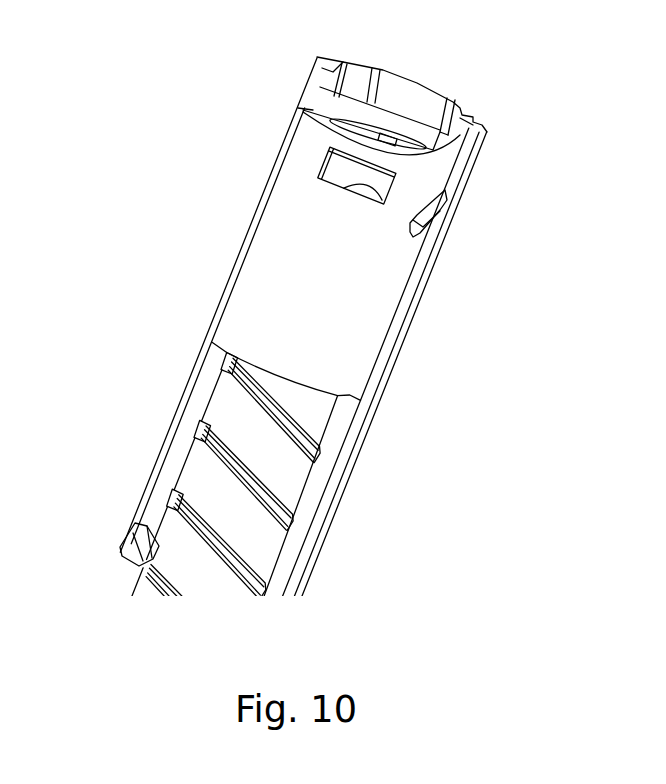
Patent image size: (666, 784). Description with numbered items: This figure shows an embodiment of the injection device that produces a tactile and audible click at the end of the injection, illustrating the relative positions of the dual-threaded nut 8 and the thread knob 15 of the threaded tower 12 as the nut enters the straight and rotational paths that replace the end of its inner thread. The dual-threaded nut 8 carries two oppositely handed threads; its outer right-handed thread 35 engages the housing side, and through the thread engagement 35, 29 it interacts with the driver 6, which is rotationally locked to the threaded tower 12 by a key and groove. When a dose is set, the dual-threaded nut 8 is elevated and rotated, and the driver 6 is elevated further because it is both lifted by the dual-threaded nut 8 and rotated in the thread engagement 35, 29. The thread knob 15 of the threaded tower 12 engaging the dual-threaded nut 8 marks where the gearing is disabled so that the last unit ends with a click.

The driver 6 is at (368, 477).
The dual-threaded nut 8 is at (282, 257).
The threaded tower 12 is at (193, 470).
The thread knob 15 is at (370, 187).
The thread engagement of the driver 29 is at (446, 203).
The outer right-handed thread 35 is at (423, 227).